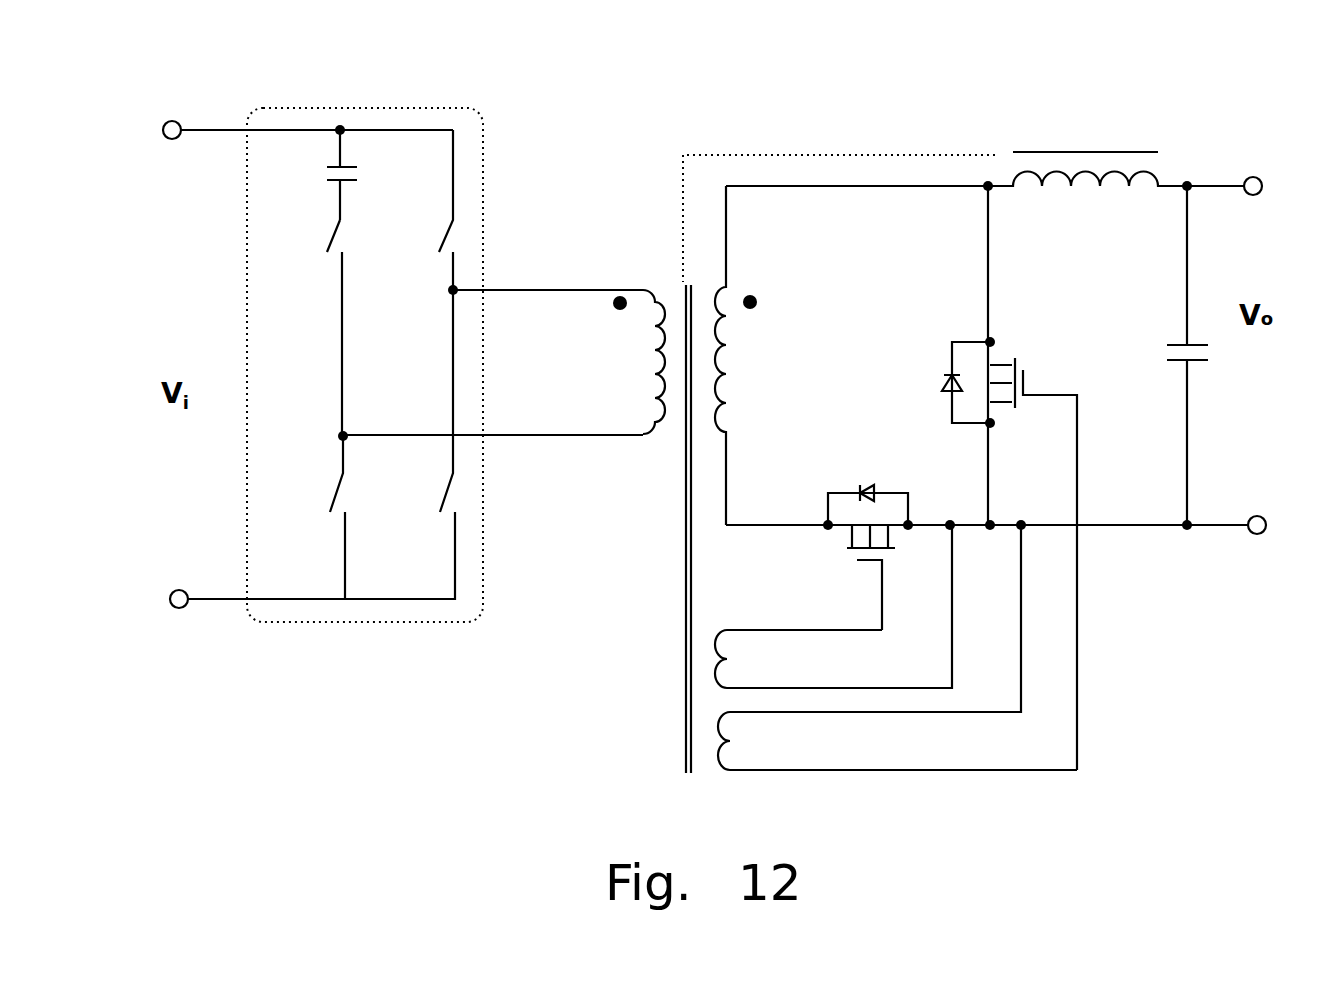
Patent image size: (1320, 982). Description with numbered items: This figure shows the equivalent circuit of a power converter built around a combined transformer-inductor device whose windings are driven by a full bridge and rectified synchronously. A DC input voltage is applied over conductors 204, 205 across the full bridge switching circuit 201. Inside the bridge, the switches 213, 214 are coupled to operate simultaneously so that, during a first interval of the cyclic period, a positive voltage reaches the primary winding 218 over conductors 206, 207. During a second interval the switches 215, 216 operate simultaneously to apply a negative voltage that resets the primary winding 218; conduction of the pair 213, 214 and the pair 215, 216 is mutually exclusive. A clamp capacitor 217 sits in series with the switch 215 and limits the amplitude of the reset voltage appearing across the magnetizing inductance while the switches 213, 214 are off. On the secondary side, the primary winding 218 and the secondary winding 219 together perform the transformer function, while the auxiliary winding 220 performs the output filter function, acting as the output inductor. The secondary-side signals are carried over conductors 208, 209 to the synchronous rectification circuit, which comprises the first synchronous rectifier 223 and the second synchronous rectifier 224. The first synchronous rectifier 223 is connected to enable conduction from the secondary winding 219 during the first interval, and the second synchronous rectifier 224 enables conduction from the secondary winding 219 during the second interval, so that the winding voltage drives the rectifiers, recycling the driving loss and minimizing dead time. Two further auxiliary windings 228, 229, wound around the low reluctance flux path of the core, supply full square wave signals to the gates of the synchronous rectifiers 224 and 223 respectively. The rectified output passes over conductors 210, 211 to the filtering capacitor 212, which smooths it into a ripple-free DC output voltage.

The full bridge switching circuit 201 is at (385, 117).
The conductor 204 is at (207, 130).
The conductor 205 is at (215, 602).
The conductor 206 is at (555, 287).
The conductor 207 is at (558, 435).
The conductor 208 is at (800, 187).
The conductor 209 is at (772, 525).
The conductor 210 is at (1217, 182).
The conductor 211 is at (1220, 527).
The filtering capacitor 212 is at (1161, 355).
The switch 213 is at (420, 210).
The switch 214 is at (311, 517).
The switch 215 is at (309, 328).
The switch 216 is at (399, 444).
The clamp capacitor 217 is at (313, 175).
The primary winding 218 is at (624, 362).
The secondary winding 219 is at (752, 355).
The auxiliary winding 220 is at (1087, 187).
The first synchronous rectifier 223 is at (985, 478).
The second synchronous rectifier 224 is at (860, 563).
The auxiliary winding 228 is at (765, 630).
The auxiliary winding 229 is at (765, 773).